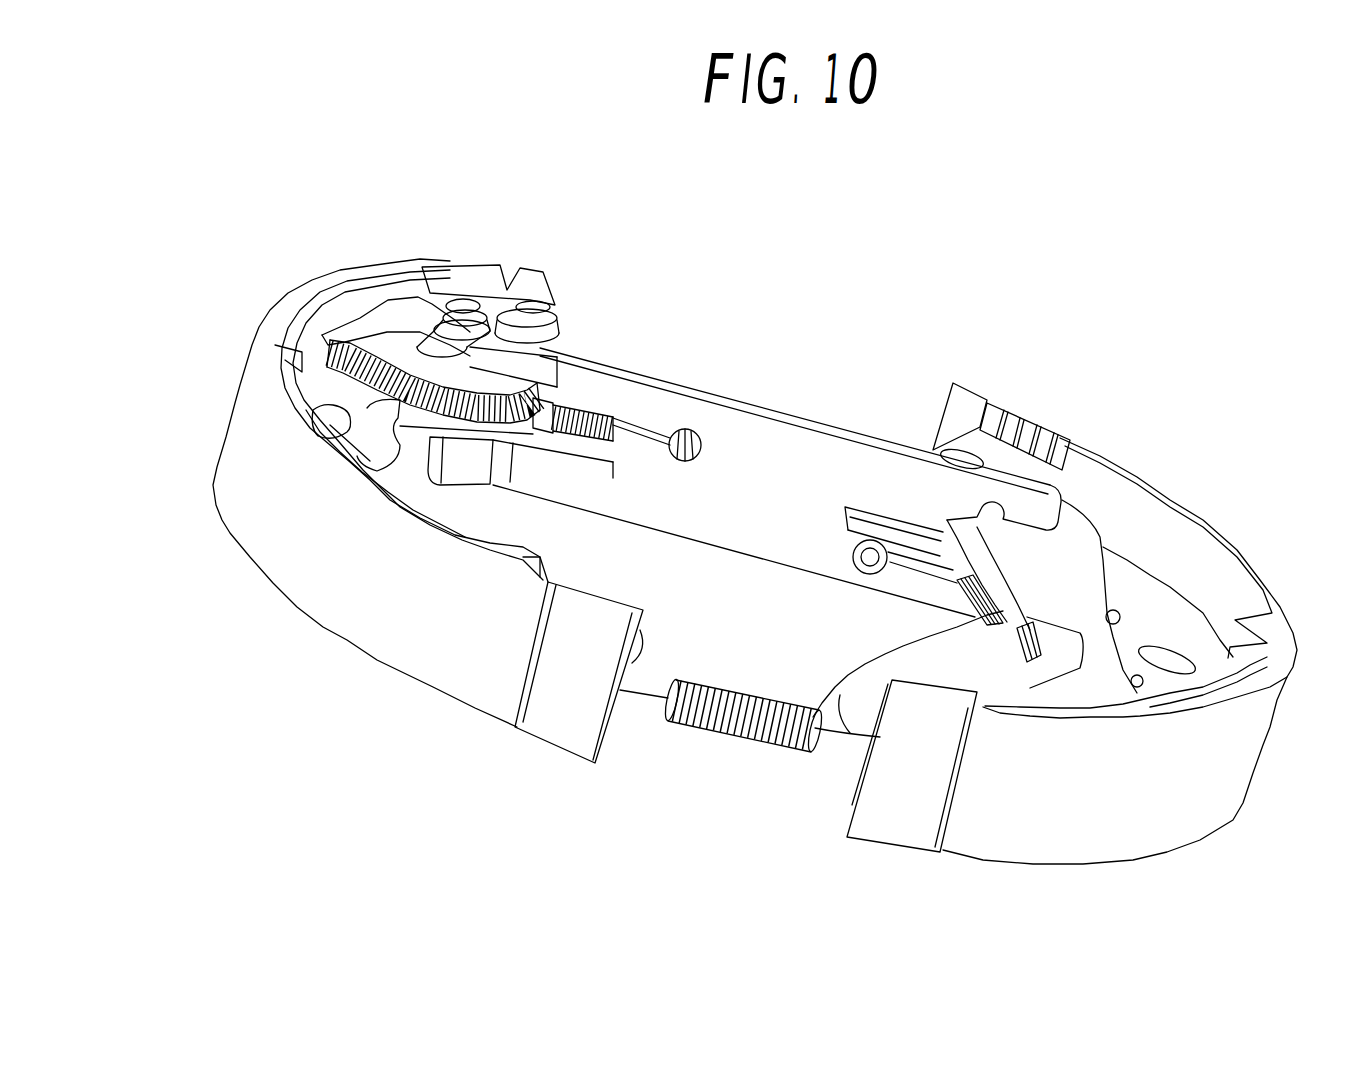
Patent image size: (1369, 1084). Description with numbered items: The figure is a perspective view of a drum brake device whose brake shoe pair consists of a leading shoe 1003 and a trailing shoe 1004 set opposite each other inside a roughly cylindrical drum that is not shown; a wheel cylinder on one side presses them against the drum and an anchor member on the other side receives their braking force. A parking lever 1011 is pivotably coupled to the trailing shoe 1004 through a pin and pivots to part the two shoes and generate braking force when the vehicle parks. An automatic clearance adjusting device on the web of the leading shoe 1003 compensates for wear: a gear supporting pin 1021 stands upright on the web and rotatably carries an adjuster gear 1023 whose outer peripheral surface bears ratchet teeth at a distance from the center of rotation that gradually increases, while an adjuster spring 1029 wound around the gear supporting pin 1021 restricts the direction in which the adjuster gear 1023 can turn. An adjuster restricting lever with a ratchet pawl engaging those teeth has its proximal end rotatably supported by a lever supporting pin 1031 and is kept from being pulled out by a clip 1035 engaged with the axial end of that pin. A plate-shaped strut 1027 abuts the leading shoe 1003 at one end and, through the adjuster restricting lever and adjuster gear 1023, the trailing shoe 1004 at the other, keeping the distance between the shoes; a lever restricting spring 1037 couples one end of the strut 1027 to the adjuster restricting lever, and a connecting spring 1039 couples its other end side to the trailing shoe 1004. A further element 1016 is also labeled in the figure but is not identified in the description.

The leading shoe 1003 is at (400, 623).
The trailing shoe 1004 is at (1177, 803).
The parking lever 1011 is at (1063, 560).
The return spring 1016 is at (728, 733).
The gear supporting pin 1021 is at (465, 304).
The adjuster gear 1023 is at (375, 302).
The strut 1027 is at (783, 470).
The adjuster spring 1029 is at (418, 317).
The lever supporting pin 1031 is at (527, 315).
The clip 1035 is at (560, 325).
The lever restricting spring 1037 is at (583, 413).
The connecting spring 1039 is at (800, 737).